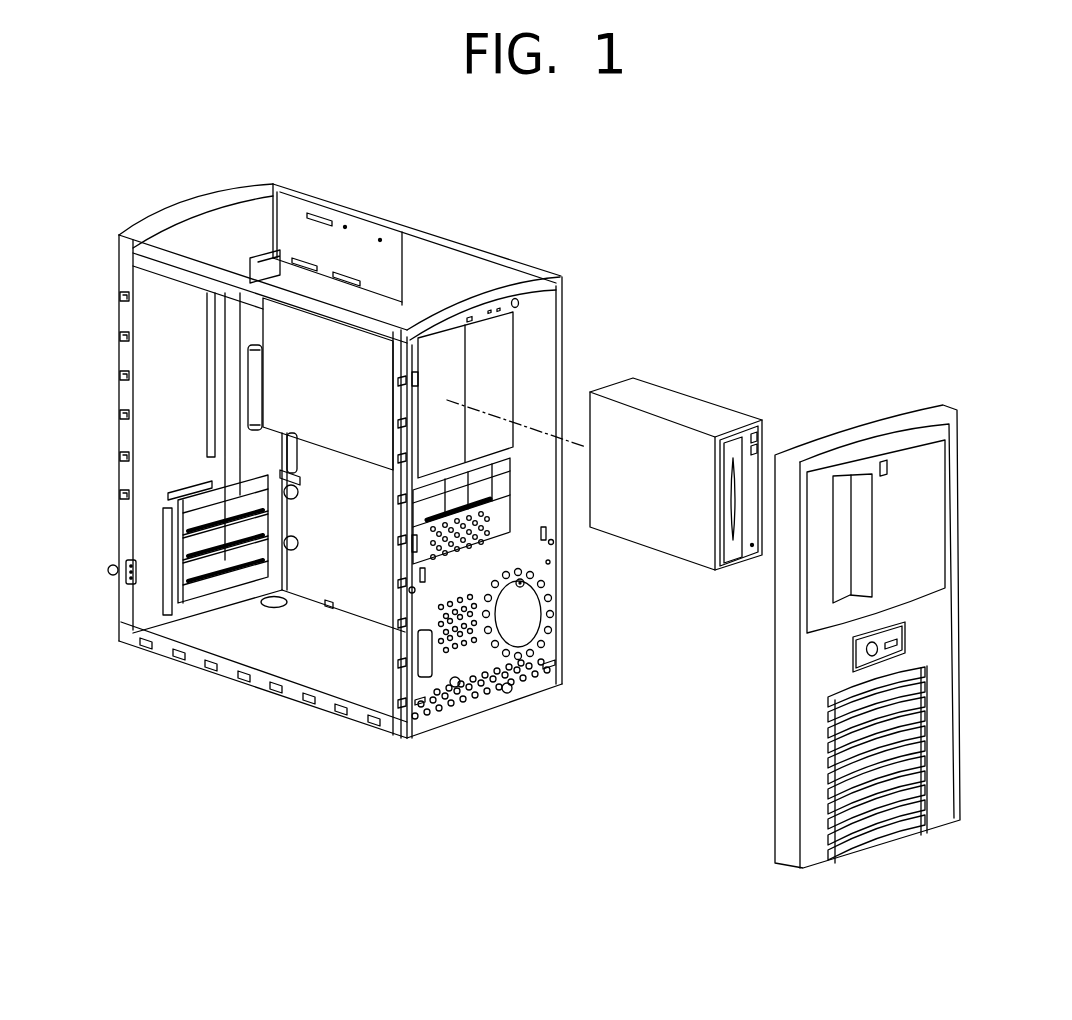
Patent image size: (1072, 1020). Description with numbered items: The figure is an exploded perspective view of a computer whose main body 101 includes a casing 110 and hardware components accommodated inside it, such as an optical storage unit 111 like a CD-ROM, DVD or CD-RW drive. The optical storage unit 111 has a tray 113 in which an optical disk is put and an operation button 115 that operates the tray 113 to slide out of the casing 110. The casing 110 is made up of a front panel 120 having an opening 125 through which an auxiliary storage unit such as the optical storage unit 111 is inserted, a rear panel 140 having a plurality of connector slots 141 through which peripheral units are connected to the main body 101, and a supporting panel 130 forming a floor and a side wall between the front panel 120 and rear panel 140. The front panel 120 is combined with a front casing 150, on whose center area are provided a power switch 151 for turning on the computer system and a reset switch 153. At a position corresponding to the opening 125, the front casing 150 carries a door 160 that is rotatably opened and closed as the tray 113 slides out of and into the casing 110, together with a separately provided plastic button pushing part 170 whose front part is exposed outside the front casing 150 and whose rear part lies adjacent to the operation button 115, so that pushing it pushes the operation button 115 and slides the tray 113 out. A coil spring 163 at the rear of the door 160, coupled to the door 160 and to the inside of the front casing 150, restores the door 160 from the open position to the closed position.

The main body 101 is at (597, 250).
The casing 110 is at (670, 868).
The optical storage unit 111 is at (676, 395).
The tray 113 is at (733, 445).
The operation button 115 is at (758, 432).
The front panel 120 is at (517, 693).
The opening 125 is at (441, 377).
The supporting panel 130 is at (353, 687).
The rear panel 140 is at (152, 605).
The connector slots 141 is at (253, 383).
The front casing 150 is at (777, 788).
The power switch 151 is at (905, 651).
The reset switch 153 is at (892, 637).
The door 160 is at (858, 480).
The coil spring 163 is at (850, 532).
The button pushing part 170 is at (882, 461).